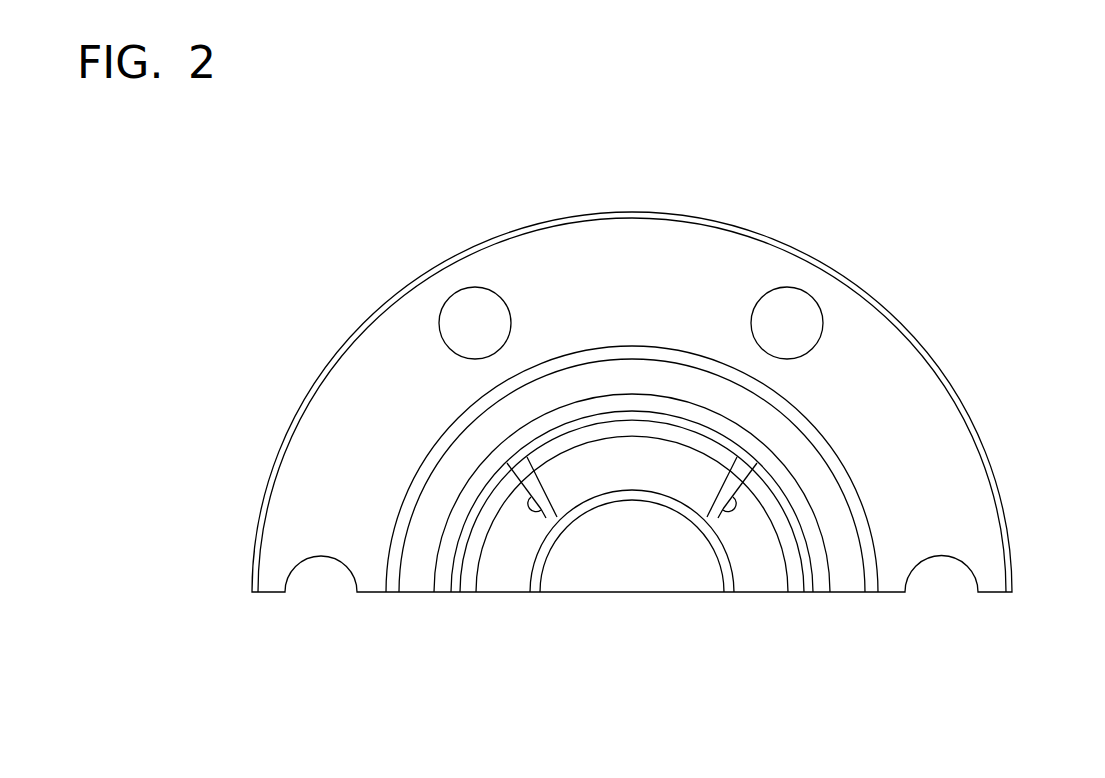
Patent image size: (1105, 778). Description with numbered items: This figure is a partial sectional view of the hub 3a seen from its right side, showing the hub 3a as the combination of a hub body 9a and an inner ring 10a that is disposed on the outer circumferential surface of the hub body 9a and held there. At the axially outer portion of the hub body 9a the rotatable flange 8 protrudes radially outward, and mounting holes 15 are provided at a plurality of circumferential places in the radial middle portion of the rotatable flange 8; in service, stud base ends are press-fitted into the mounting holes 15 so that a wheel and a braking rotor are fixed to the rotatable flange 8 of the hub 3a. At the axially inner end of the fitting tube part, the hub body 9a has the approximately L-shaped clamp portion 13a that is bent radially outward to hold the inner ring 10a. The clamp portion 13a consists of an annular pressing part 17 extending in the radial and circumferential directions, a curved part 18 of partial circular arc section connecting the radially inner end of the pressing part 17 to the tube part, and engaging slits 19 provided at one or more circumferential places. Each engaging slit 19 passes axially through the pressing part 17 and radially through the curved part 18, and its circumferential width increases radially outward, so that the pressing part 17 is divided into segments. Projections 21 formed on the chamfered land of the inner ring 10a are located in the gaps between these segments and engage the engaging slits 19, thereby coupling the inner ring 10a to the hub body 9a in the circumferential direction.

The hub 3a is at (298, 352).
The rotatable flange 8 is at (660, 240).
The hub body 9a is at (950, 448).
The inner ring 10a is at (823, 575).
The clamp portion 13a is at (465, 582).
The mounting holes 15 is at (456, 295).
The pressing part 17 is at (800, 575).
The curved part 18 is at (601, 474).
The engaging slits 19 is at (547, 530).
The projections 21 is at (518, 480).